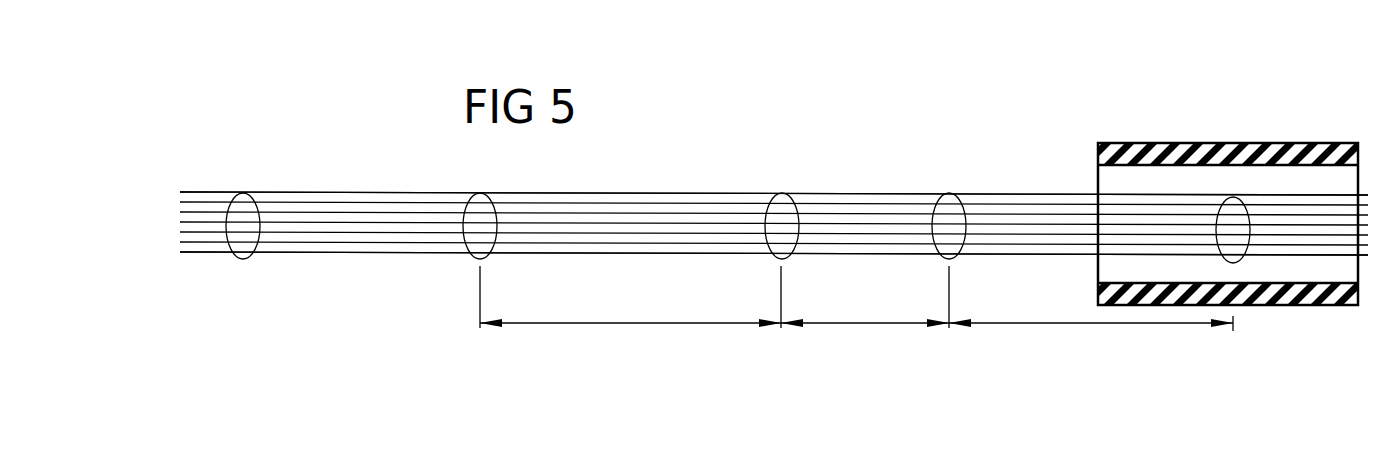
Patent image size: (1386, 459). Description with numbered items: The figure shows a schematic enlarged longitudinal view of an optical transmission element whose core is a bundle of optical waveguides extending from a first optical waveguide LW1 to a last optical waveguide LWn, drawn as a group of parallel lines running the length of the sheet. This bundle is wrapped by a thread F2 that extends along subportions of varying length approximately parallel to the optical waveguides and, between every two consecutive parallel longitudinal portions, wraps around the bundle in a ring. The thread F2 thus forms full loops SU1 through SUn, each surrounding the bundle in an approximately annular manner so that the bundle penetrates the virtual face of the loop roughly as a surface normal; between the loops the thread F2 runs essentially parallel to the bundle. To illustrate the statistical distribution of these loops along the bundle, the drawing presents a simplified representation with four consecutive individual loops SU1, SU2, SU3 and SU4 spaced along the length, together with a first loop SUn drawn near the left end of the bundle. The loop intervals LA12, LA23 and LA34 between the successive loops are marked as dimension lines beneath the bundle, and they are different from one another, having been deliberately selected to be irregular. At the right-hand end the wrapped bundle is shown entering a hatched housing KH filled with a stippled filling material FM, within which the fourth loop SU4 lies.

The thread F2 is at (358, 192).
The optical waveguide LWn is at (188, 192).
The optical waveguide LW1 is at (200, 256).
The loop SUn is at (252, 258).
The loop SU1 is at (472, 262).
The loop SU2 is at (774, 262).
The loop SU3 is at (941, 262).
The loop SU4 is at (1238, 263).
The loop interval LA12 is at (645, 325).
The loop interval LA23 is at (868, 325).
The loop interval LA34 is at (1097, 325).
The cable housing KH is at (1150, 152).
The filling material FM is at (1268, 182).